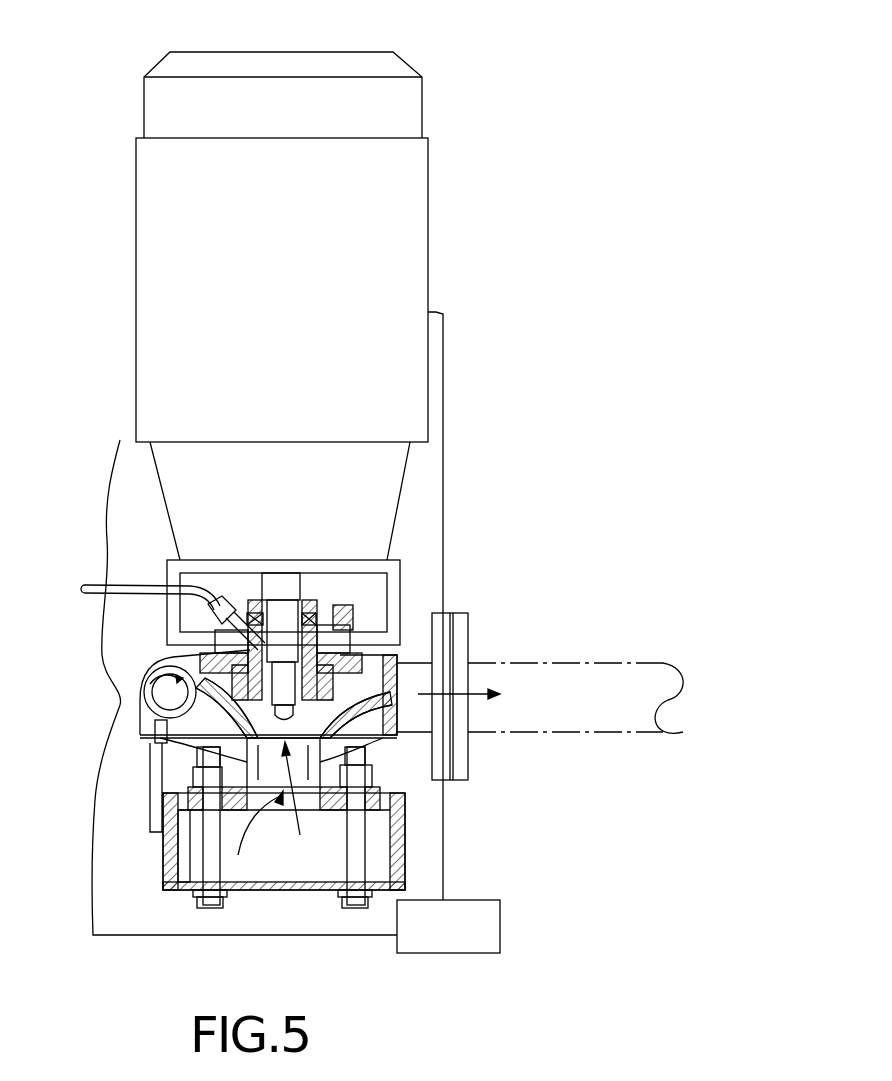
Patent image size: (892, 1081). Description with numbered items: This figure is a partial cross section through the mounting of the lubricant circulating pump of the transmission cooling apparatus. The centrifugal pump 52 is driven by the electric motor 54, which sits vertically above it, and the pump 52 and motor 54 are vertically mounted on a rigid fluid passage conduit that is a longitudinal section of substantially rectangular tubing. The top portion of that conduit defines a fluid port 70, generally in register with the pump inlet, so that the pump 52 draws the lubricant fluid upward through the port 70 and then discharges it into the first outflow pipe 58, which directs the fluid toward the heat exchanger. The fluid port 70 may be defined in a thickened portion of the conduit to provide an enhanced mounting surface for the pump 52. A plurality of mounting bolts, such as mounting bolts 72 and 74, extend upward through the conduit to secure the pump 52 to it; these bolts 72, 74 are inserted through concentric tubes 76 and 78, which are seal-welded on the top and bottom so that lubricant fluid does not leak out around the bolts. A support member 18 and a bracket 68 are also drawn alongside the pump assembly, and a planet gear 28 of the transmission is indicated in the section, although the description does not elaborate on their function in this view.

The electric motor 54 is at (428, 247).
The support rod 18 is at (443, 507).
The first outflow pipe 58 is at (585, 660).
The centrifugal pump 52 is at (136, 705).
The mounting bracket 68 is at (150, 808).
The tube 78 is at (382, 805).
The planet gear 28 is at (400, 870).
The fluid port 70 is at (287, 745).
The tube 76 is at (197, 860).
The mounting bolt 72 is at (210, 910).
The mounting bolt 74 is at (357, 910).